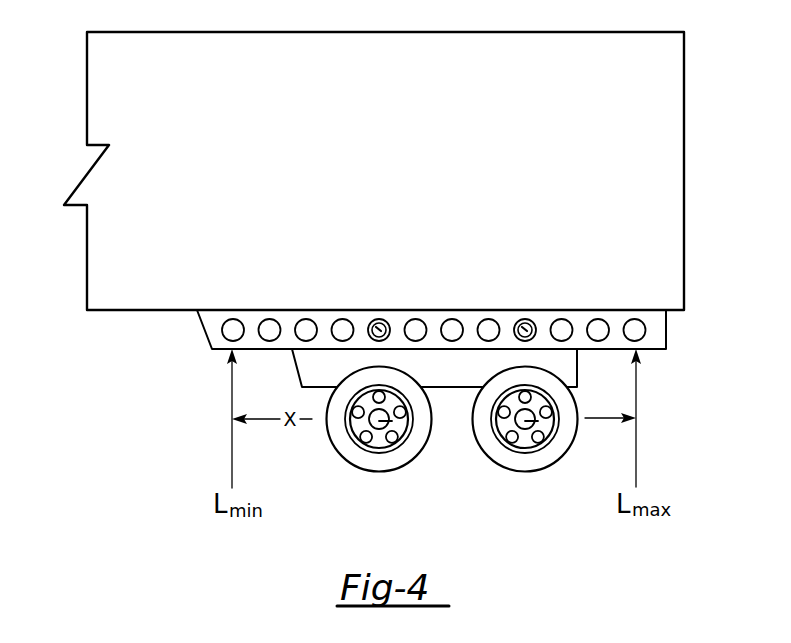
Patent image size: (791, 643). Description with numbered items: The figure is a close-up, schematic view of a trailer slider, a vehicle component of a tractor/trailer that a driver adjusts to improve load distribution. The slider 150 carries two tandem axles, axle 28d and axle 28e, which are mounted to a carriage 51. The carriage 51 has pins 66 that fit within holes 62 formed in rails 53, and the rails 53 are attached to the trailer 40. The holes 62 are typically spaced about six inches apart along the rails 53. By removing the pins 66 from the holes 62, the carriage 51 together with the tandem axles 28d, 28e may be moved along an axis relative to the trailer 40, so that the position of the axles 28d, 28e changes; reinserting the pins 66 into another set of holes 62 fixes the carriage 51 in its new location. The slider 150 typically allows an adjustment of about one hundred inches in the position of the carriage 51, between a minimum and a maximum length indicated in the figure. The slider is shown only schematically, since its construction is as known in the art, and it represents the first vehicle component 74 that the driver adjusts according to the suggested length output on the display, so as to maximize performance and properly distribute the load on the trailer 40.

The trailer 40 is at (570, 114).
The rails 53 is at (672, 332).
The slider 150 is at (146, 332).
The holes 62 is at (268, 318).
The pins 66 is at (375, 318).
The carriage 51 is at (450, 373).
The axle 28d is at (395, 425).
The axle 28e is at (539, 425).
The first vehicle component 74 is at (501, 516).